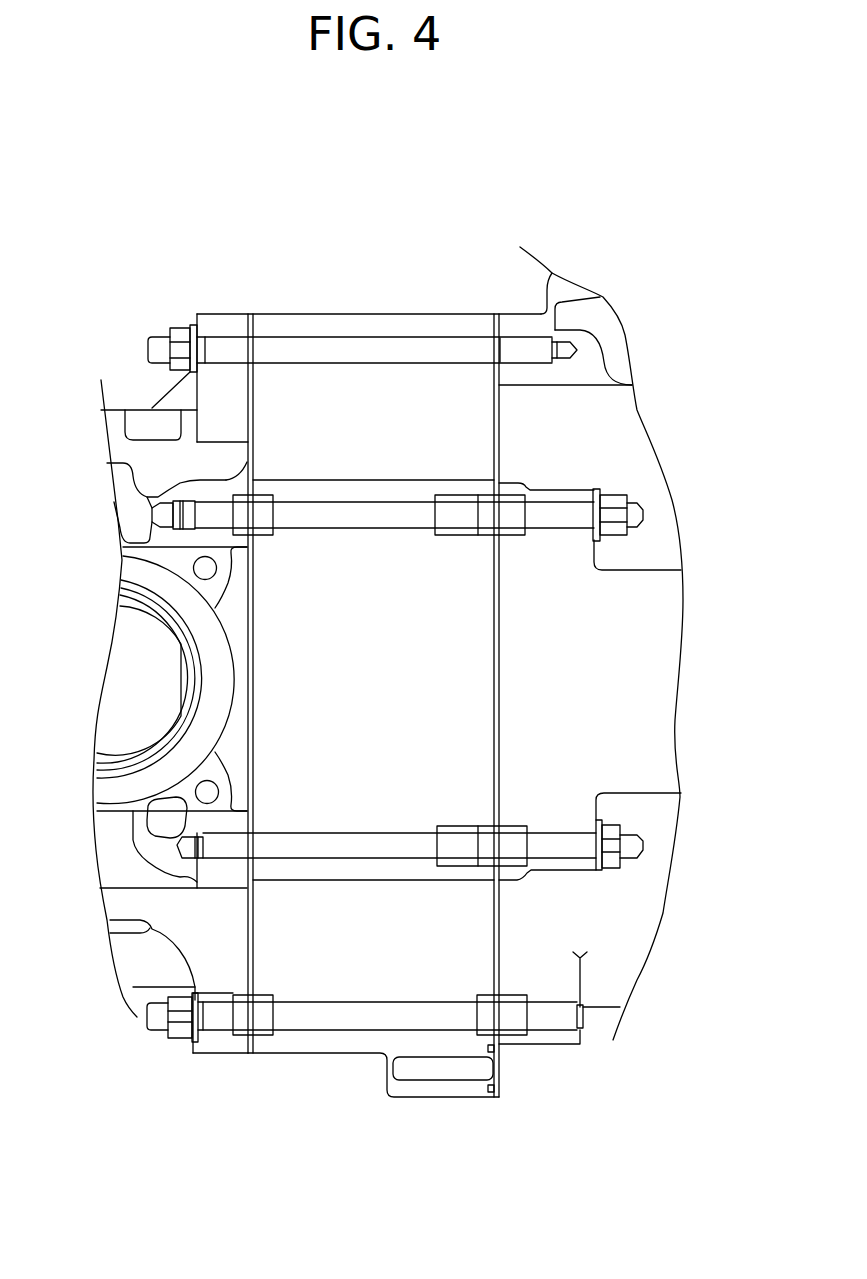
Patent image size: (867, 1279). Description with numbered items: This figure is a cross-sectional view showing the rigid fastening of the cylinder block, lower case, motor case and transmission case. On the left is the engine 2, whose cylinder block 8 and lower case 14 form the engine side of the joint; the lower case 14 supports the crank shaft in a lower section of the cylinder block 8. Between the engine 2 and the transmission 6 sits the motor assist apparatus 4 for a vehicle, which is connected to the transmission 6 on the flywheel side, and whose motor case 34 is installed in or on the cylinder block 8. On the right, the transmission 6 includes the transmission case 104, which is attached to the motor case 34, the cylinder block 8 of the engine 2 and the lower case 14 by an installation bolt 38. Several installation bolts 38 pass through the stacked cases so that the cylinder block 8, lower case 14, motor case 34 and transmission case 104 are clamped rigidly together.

The engine 2 is at (137, 630).
The motor assist apparatus for a vehicle 4 is at (366, 182).
The transmission 6 is at (632, 623).
The cylinder block 8 is at (132, 811).
The lower case 14 is at (218, 324).
The motor case 34 is at (427, 320).
The installation bolt 38 is at (287, 343).
The transmission case 104 is at (667, 592).